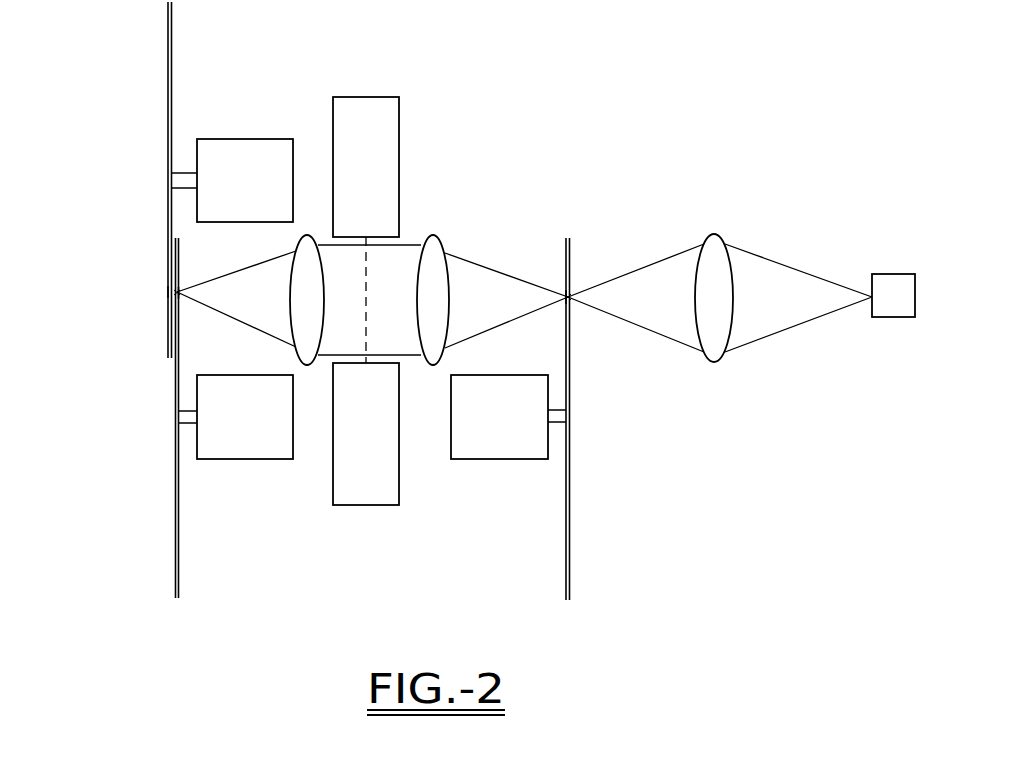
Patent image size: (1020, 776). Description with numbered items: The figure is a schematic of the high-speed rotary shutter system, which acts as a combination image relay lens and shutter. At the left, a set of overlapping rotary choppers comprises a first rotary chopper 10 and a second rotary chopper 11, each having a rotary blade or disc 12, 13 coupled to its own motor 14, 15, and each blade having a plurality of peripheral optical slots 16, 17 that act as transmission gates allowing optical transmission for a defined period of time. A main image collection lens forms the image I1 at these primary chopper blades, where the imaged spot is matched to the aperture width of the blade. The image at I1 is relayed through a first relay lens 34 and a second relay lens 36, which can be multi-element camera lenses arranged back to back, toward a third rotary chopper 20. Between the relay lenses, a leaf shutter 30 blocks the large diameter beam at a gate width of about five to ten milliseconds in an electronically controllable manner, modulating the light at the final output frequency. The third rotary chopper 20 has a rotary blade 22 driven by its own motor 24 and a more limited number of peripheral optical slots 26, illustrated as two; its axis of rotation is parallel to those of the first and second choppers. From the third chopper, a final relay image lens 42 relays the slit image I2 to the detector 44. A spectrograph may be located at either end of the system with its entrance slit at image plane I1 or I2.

The first rotary chopper 10 is at (156, 308).
The second rotary chopper 11 is at (157, 179).
The rotary blade 12 is at (178, 585).
The rotary blade 13 is at (172, 40).
The motor 14 is at (236, 459).
The motor 15 is at (245, 139).
The peripheral optical slots 16 is at (178, 293).
The peripheral optical slots 17 is at (172, 292).
The third rotary chopper 20 is at (613, 398).
The rotary blade 22 is at (571, 248).
The motor 24 is at (497, 459).
The peripheral optical slots 26 is at (571, 295).
The leaf shutter 30 is at (374, 514).
The first relay lens 34 is at (303, 241).
The second relay lens 36 is at (437, 246).
The final relay image lens 42 is at (718, 238).
The detector 44 is at (885, 275).
The image plane I1 is at (157, 275).
The slit image plane I2 is at (577, 312).